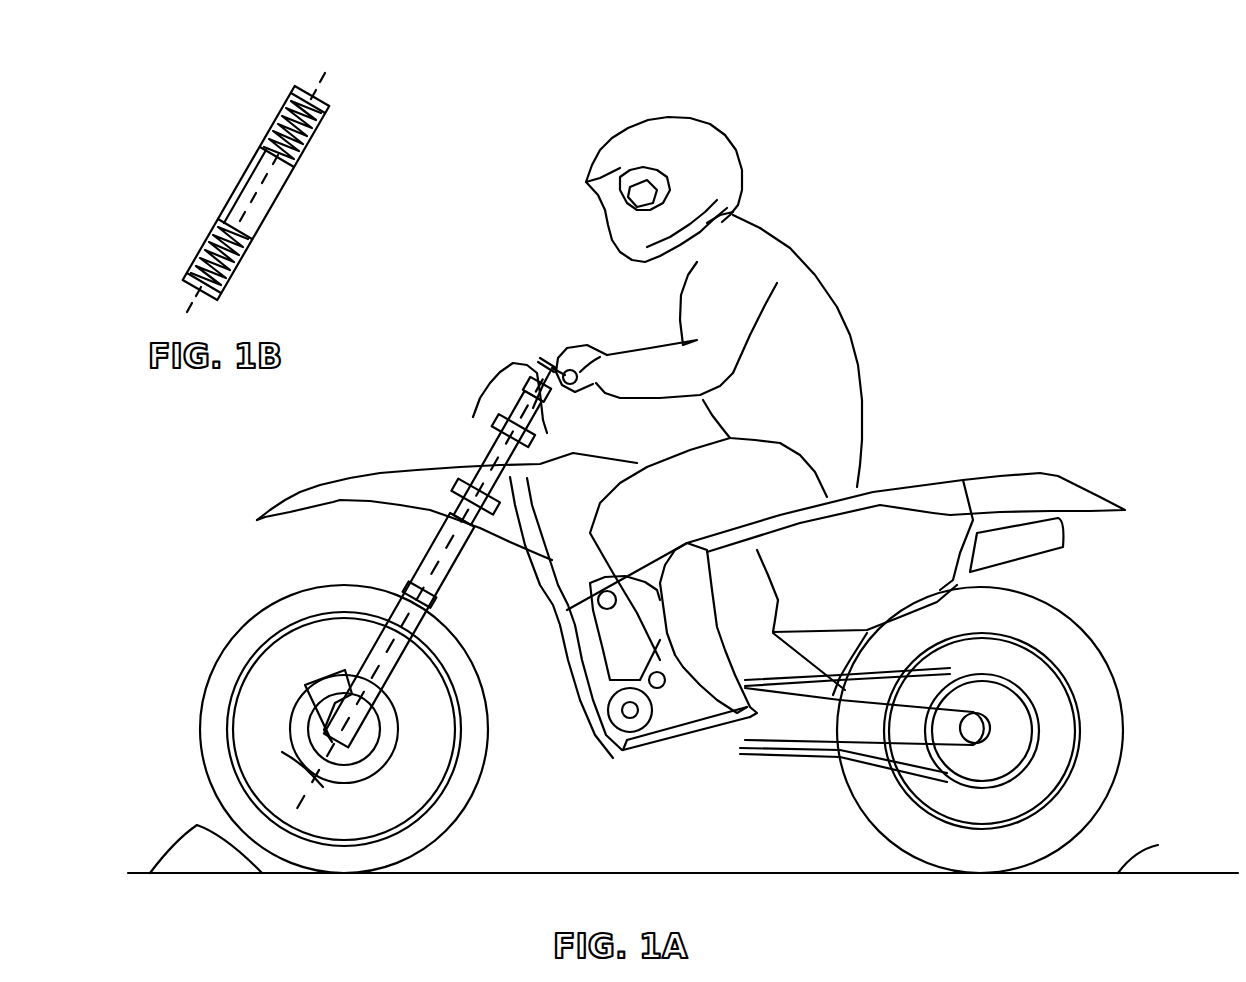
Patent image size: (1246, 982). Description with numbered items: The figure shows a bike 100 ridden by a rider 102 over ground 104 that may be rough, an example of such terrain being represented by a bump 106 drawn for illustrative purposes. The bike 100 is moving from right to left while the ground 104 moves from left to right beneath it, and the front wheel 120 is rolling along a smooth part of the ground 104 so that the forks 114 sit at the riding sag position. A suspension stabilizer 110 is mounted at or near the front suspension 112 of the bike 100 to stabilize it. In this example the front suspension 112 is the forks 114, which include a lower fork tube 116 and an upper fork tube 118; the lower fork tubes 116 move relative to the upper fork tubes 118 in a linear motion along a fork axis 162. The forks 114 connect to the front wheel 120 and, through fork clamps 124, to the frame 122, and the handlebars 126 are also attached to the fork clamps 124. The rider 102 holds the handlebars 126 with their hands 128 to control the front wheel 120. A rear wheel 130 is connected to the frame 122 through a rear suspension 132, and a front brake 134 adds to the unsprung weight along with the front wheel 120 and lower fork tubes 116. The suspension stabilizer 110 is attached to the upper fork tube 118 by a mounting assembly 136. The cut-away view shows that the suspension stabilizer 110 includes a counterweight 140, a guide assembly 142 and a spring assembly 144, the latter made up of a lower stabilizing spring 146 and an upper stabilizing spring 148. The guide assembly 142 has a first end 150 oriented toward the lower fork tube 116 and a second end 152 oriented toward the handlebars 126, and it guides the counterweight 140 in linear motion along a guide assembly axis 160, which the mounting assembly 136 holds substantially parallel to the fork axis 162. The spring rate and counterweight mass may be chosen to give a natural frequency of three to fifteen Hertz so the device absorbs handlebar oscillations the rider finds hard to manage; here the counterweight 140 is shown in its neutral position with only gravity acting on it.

In FIG. 1A, the bike 100 is at (993, 460).
In FIG. 1A, the rider 102 is at (813, 258).
In FIG. 1A, the ground 104 is at (1164, 850).
In FIG. 1A, the bump 106 is at (172, 845).
In FIG. 1B, the suspension stabilizer 110 is at (190, 174).
In FIG. 1A, the suspension stabilizer 110 is at (470, 447).
In FIG. 1A, the front suspension 112 is at (384, 552).
In FIG. 1A, the forks 114 is at (410, 682).
In FIG. 1A, the lower fork tube 116 is at (368, 660).
In FIG. 1A, the upper fork tube 118 is at (445, 590).
In FIG. 1A, the front wheel 120 is at (455, 785).
In FIG. 1A, the frame 122 is at (558, 446).
In FIG. 1A, the fork clamps 124 is at (512, 413).
In FIG. 1A, the handlebars 126 is at (587, 360).
In FIG. 1A, the hands 128 is at (560, 352).
In FIG. 1A, the rear wheel 130 is at (1120, 748).
In FIG. 1A, the rear suspension 132 is at (815, 765).
In FIG. 1A, the front brake 134 is at (302, 688).
In FIG. 1A, the mounting assembly 136 is at (472, 430).
In FIG. 1B, the counterweight 140 is at (268, 197).
In FIG. 1B, the guide assembly 142 is at (290, 152).
In FIG. 1B, the spring assembly 144 is at (258, 117).
In FIG. 1B, the lower stabilizing spring 146 is at (240, 240).
In FIG. 1B, the upper stabilizing spring 148 is at (305, 130).
In FIG. 1B, the first end 150 is at (190, 285).
In FIG. 1B, the second end 152 is at (315, 100).
In FIG. 1B, the guide assembly axis 160 is at (318, 76).
In FIG. 1A, the fork axis 162 is at (322, 785).